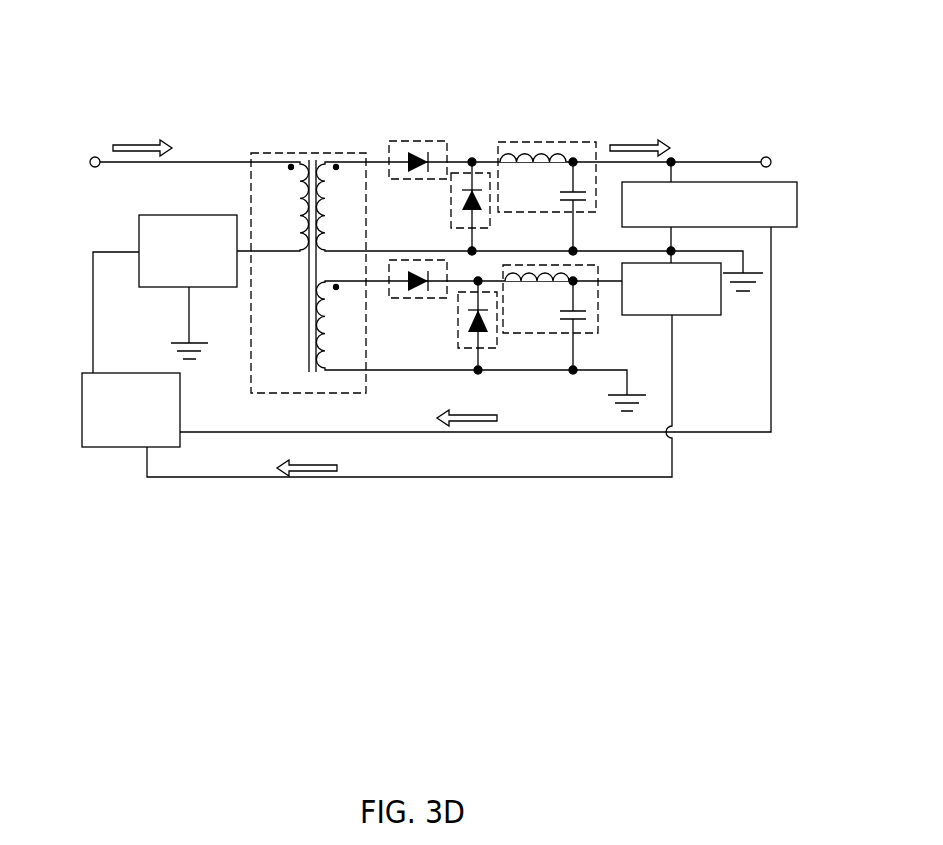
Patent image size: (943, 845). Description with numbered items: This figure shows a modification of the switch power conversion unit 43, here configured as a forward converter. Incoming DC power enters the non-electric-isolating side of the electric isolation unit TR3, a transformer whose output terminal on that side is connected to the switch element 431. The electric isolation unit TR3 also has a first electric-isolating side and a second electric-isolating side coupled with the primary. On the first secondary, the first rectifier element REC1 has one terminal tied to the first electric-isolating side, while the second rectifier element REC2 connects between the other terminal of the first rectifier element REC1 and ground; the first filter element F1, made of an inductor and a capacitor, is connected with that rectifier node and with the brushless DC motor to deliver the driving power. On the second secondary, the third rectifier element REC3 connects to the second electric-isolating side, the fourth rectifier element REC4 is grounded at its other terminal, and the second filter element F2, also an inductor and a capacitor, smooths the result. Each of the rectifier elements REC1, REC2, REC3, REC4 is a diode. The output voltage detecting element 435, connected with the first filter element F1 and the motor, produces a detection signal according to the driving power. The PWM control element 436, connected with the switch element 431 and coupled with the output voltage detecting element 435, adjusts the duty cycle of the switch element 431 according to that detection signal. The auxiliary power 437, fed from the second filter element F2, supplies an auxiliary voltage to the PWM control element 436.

The switch power conversion unit 43 is at (78, 75).
The switch element 431 is at (148, 287).
The output voltage detecting element 435 is at (782, 182).
The PWM control element 436 is at (105, 447).
The auxiliary power 437 is at (688, 316).
The electric isolation unit TR3 is at (328, 152).
The first rectifier element REC1 is at (417, 141).
The second rectifier element REC2 is at (451, 201).
The third rectifier element REC3 is at (403, 298).
The fourth rectifier element REC4 is at (458, 325).
The first filter element F1 is at (533, 142).
The second filter element F2 is at (598, 317).